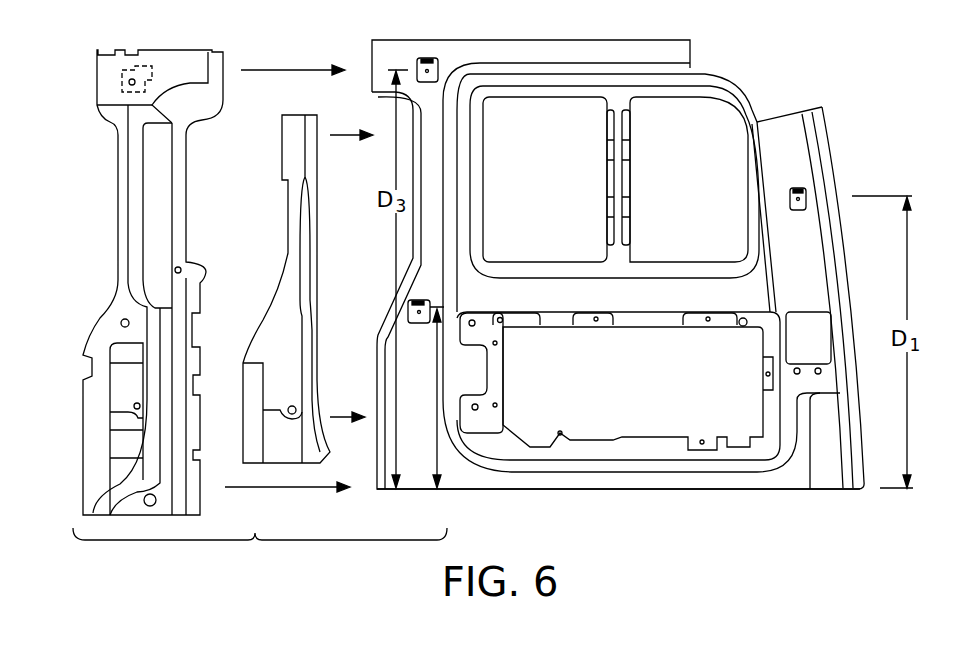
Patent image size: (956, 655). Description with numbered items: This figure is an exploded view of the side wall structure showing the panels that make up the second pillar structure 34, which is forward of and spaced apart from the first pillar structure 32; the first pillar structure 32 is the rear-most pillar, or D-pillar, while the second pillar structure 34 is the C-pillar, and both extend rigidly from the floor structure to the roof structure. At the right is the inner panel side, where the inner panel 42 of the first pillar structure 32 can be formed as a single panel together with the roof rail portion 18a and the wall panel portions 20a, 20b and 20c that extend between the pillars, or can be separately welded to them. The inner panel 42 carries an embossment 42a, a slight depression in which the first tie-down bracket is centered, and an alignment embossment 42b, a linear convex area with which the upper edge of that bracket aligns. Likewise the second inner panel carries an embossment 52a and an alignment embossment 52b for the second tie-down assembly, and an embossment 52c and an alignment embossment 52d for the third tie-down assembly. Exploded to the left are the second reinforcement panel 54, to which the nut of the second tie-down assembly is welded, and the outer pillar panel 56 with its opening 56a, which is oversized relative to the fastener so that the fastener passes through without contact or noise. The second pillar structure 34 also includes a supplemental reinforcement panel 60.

The roof rail portion 18a is at (630, 52).
The wall panel portion 20a is at (703, 137).
The wall panel portion 20b is at (648, 297).
The wall panel portion 20c is at (668, 481).
The first pillar structure 32 is at (810, 230).
The second pillar structure 34 is at (260, 550).
The inner panel 42 is at (813, 289).
The embossment 42a is at (790, 198).
The alignment embossment 42b is at (800, 187).
The embossment 52a is at (432, 305).
The alignment embossment 52b is at (421, 300).
The embossment 52c is at (440, 68).
The alignment embossment 52d is at (427, 57).
The second reinforcement panel 54 is at (286, 227).
The outer pillar panel 56 is at (178, 164).
The opening 56a is at (121, 319).
The supplemental reinforcement panel 60 is at (152, 64).